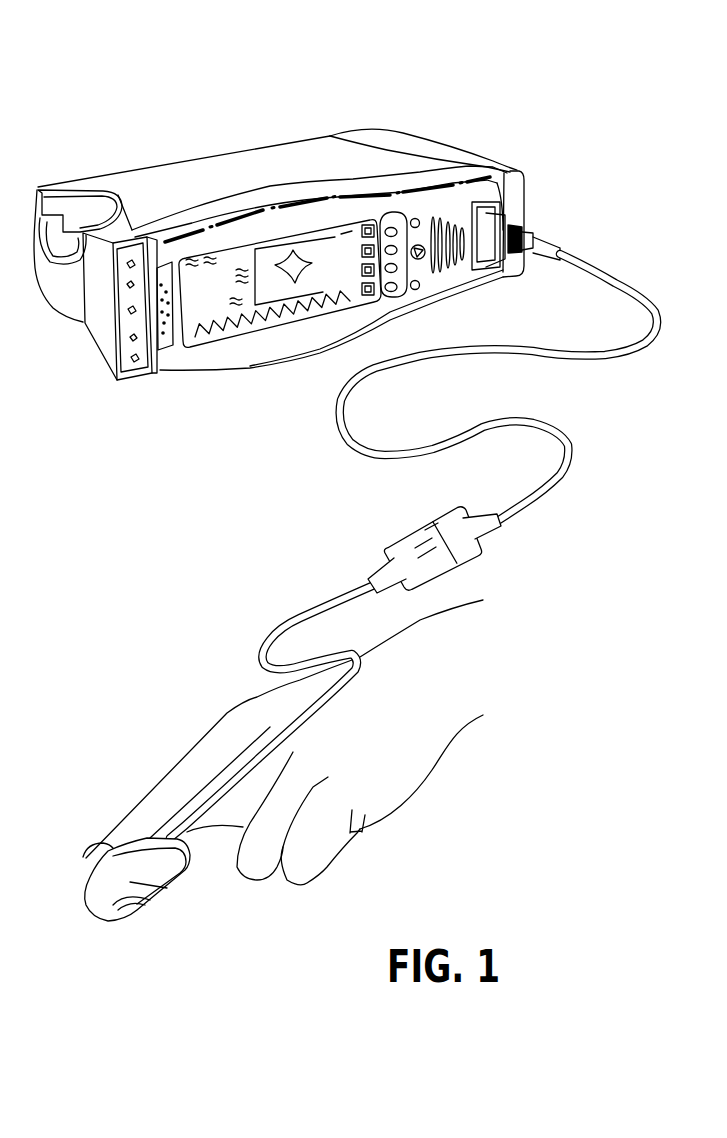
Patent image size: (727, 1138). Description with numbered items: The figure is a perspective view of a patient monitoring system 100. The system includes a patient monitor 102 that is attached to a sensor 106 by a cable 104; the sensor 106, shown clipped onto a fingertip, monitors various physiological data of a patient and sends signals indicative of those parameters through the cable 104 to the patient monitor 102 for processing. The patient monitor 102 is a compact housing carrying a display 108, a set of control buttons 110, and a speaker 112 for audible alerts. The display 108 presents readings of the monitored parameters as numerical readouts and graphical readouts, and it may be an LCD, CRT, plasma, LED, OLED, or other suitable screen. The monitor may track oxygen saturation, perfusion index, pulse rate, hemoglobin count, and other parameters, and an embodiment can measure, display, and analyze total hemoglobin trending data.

The patient monitoring system 100 is at (196, 119).
The patient monitor 102 is at (337, 170).
The cable 104 is at (361, 446).
The sensor 106 is at (163, 890).
The display 108 is at (193, 340).
The control buttons 110 is at (398, 292).
The speaker 112 is at (448, 272).